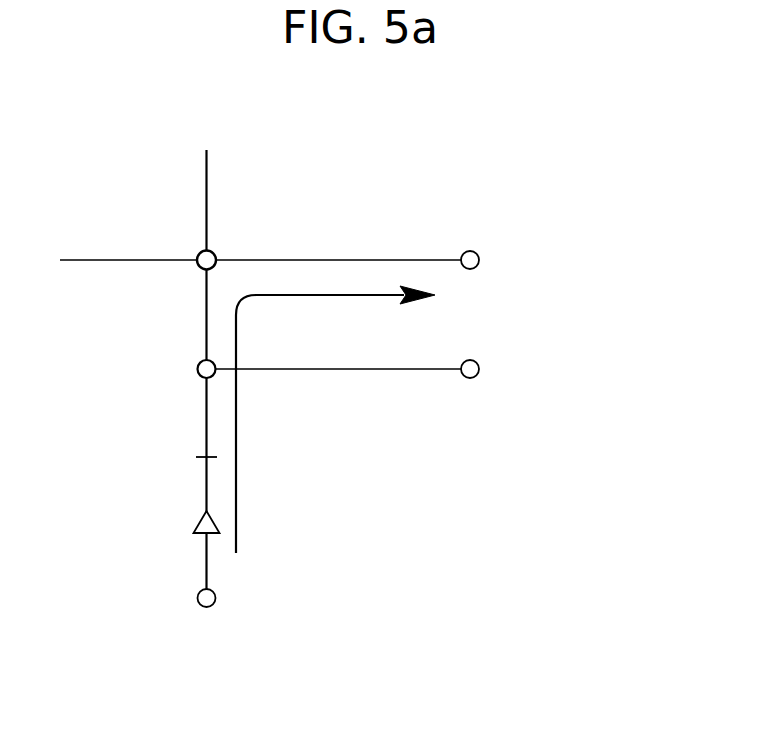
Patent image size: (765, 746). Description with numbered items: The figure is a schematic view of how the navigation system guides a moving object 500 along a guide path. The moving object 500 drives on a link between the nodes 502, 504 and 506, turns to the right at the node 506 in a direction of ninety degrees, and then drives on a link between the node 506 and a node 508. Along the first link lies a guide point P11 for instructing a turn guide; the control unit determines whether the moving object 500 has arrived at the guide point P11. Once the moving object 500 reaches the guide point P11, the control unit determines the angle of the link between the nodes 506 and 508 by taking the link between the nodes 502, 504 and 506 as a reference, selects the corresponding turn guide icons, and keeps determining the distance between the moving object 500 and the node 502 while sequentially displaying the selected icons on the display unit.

The moving object 500 is at (203, 516).
The node 502 is at (214, 594).
The node 504 is at (202, 363).
The node 506 is at (214, 253).
The node 508 is at (479, 254).
The guide point P11 is at (206, 456).